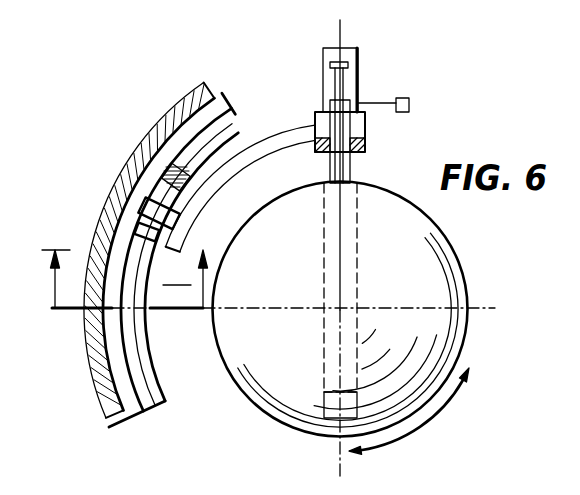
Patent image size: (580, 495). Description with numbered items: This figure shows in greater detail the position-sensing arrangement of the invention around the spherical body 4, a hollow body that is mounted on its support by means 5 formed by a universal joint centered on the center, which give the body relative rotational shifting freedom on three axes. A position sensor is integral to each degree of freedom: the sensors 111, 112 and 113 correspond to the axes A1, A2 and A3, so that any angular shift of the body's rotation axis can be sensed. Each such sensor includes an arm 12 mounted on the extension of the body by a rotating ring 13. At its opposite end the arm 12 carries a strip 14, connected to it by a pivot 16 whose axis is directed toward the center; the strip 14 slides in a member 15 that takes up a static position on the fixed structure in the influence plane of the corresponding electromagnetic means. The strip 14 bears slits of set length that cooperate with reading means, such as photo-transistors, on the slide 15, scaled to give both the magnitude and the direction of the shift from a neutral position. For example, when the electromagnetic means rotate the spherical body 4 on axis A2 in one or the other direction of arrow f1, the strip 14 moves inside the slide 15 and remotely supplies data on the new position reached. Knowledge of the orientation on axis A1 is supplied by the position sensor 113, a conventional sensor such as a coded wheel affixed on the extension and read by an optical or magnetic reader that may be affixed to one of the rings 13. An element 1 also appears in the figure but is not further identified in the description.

The rotating disc 1 is at (456, 223).
The spherical body 4 is at (456, 276).
The means 5 is at (353, 172).
The arm 12 is at (284, 138).
The rotating ring 13 is at (366, 129).
The strip 14 is at (229, 97).
The member 15 is at (128, 416).
The pivot 16 is at (180, 222).
The position sensor 111 is at (414, 94).
The position sensor 112 is at (153, 118).
The position sensor 113 is at (366, 93).
The axis A1 is at (339, 257).
The axis A2 is at (342, 307).
The axis A3 is at (207, 312).
The arrow F1 f1 is at (427, 421).